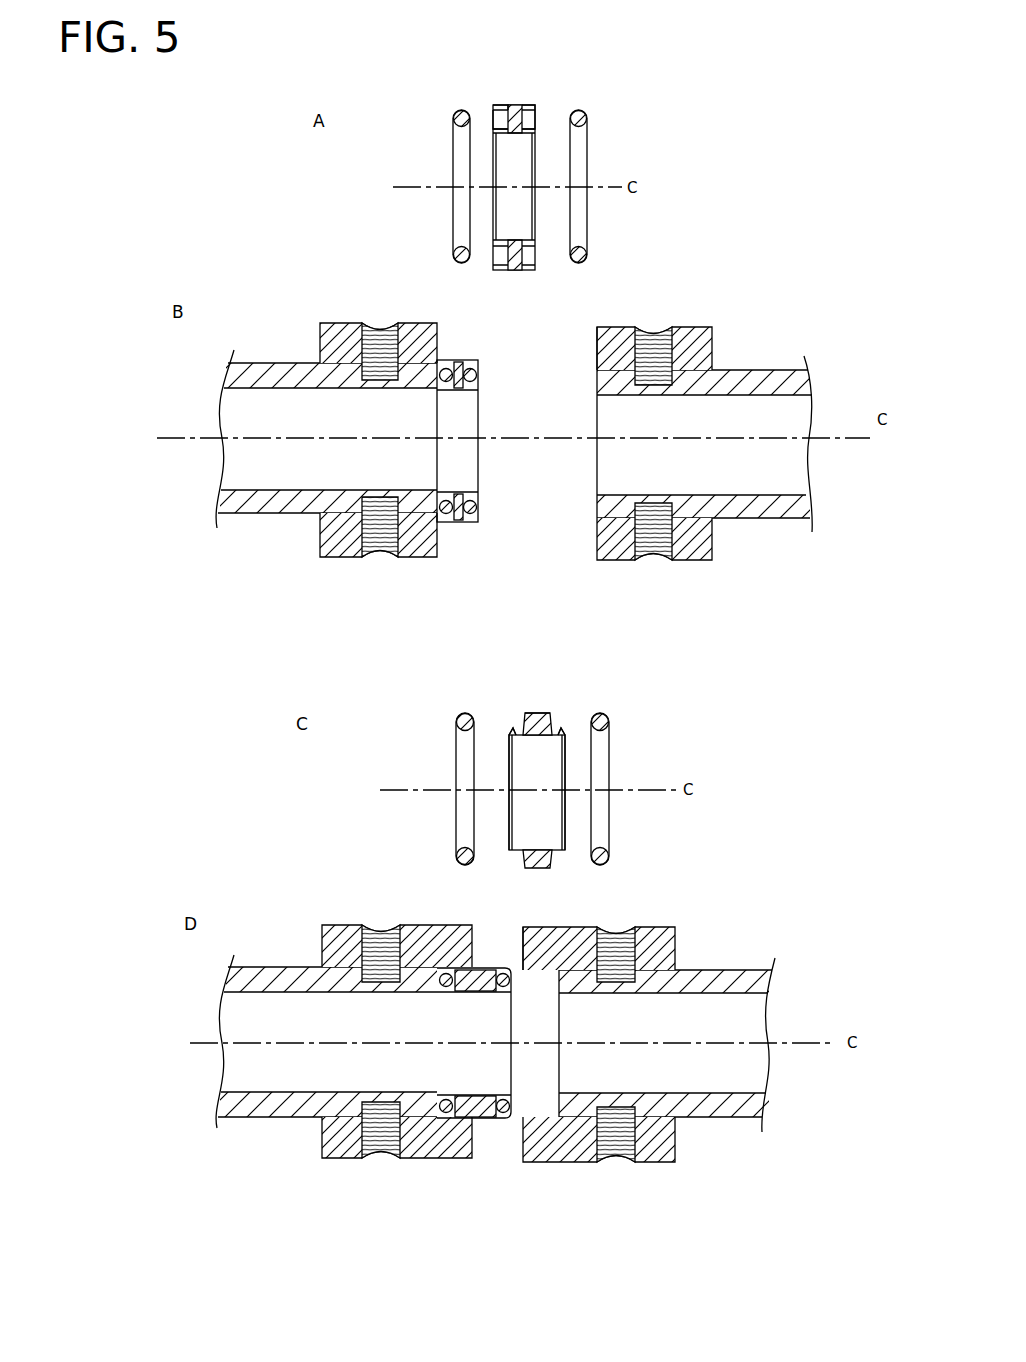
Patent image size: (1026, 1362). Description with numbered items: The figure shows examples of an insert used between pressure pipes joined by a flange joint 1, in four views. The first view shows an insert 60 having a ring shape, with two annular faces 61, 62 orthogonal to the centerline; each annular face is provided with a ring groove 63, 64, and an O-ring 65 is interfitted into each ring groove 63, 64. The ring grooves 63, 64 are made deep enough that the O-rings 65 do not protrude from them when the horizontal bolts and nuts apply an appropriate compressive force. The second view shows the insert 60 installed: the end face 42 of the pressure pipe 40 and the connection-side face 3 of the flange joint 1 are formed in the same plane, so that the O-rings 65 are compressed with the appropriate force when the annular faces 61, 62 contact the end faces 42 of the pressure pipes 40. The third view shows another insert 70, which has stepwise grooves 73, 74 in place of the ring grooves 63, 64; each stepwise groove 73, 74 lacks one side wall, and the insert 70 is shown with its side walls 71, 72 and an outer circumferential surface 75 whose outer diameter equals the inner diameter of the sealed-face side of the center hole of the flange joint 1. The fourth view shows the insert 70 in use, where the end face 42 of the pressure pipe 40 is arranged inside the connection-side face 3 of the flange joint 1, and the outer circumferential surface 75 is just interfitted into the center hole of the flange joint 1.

The flange joint 1 is at (331, 323).
The connection-side face 3 is at (597, 343).
The pressure pipe 40 is at (272, 514).
The end face 42 is at (597, 387).
The insert 60 is at (522, 105).
The annular face 61 is at (495, 105).
The annular face 62 is at (535, 105).
The ring groove 63 is at (496, 120).
The ring groove 64 is at (530, 121).
The O-ring 65 is at (453, 160).
The insert 70 is at (541, 713).
The first side wall 71 is at (508, 737).
The second side wall 72 is at (566, 738).
The stepwise groove 73 is at (509, 719).
The stepwise groove 74 is at (567, 728).
The outer circumferential surface 75 is at (526, 713).